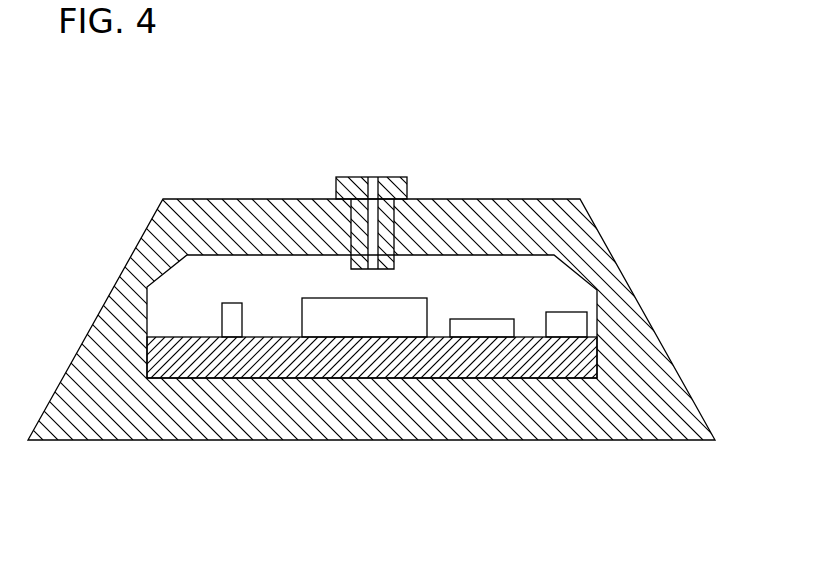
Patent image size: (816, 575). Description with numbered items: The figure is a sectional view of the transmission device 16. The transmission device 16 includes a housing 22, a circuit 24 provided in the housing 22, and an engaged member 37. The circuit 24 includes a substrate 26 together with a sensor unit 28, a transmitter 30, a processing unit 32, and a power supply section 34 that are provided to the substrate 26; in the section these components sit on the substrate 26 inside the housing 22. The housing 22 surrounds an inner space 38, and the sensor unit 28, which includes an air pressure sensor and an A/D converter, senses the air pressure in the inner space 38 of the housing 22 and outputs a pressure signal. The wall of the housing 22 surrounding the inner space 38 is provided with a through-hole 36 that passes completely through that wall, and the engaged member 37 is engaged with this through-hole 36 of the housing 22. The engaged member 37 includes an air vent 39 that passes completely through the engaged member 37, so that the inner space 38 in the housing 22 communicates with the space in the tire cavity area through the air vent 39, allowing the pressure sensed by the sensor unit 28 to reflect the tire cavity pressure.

The transmission device 16 is at (588, 105).
The housing 22 is at (611, 260).
The circuit 24 is at (170, 308).
The substrate 26 is at (382, 365).
The sensor unit 28 is at (372, 298).
The transmitter 30 is at (567, 320).
The processing unit 32 is at (480, 327).
The power supply section 34 is at (230, 317).
The through-hole 36 is at (398, 261).
The engaged member 37 is at (392, 192).
The inner space 38 is at (432, 278).
The air vent 39 is at (372, 197).